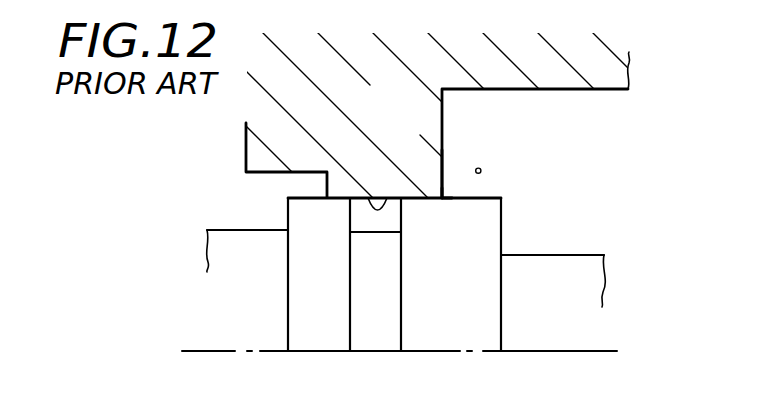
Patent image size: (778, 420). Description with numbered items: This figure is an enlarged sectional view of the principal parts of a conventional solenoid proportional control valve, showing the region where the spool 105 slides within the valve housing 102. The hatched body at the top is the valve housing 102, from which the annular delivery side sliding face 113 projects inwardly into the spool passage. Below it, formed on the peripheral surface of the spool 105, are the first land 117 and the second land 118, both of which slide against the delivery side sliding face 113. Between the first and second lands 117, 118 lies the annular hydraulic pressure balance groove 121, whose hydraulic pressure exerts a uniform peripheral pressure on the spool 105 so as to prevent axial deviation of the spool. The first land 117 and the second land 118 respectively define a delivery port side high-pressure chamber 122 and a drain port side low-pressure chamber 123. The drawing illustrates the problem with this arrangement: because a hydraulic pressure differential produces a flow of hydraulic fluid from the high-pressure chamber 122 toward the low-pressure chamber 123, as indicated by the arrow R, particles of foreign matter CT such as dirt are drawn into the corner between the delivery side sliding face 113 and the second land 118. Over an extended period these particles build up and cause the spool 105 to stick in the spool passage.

The valve housing 102 is at (505, 78).
The annular delivery side sliding face 113 is at (368, 198).
The first land 117 is at (296, 226).
The second land 118 is at (480, 233).
The annular hydraulic pressure balance groove 121 is at (387, 226).
The spool 105 is at (567, 270).
The high-pressure chamber 122 is at (600, 158).
The low-pressure chamber 123 is at (190, 197).
The particles of foreign matter CT is at (480, 167).
The arrow indicating flow of hydraulic fluid R is at (465, 182).